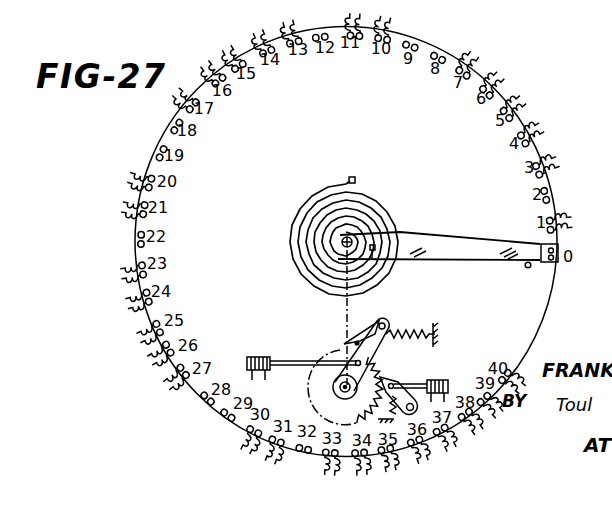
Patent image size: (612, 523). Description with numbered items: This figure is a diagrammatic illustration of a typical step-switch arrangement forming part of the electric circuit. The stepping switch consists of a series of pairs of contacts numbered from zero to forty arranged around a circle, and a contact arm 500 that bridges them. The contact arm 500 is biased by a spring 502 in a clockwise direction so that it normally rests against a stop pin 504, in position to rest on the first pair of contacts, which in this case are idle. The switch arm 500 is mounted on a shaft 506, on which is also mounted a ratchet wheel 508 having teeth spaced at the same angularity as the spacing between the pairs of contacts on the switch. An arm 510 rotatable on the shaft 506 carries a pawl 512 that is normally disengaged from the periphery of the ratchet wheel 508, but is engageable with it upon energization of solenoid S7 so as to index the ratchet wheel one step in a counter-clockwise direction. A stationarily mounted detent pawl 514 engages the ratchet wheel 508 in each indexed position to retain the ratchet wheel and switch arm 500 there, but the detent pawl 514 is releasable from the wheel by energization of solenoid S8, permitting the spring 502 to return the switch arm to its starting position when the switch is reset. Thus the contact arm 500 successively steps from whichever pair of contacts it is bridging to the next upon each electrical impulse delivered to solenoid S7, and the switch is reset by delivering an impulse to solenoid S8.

The contact arm 500 is at (480, 257).
The spring 502 is at (289, 238).
The stop pin 504 is at (531, 266).
The shaft 506 is at (351, 239).
The ratchet wheel 508 is at (314, 393).
The arm 510 is at (373, 348).
The pawl 512 is at (365, 327).
The detent pawl 514 is at (390, 385).
The solenoid S7 is at (262, 357).
The solenoid S8 is at (452, 376).